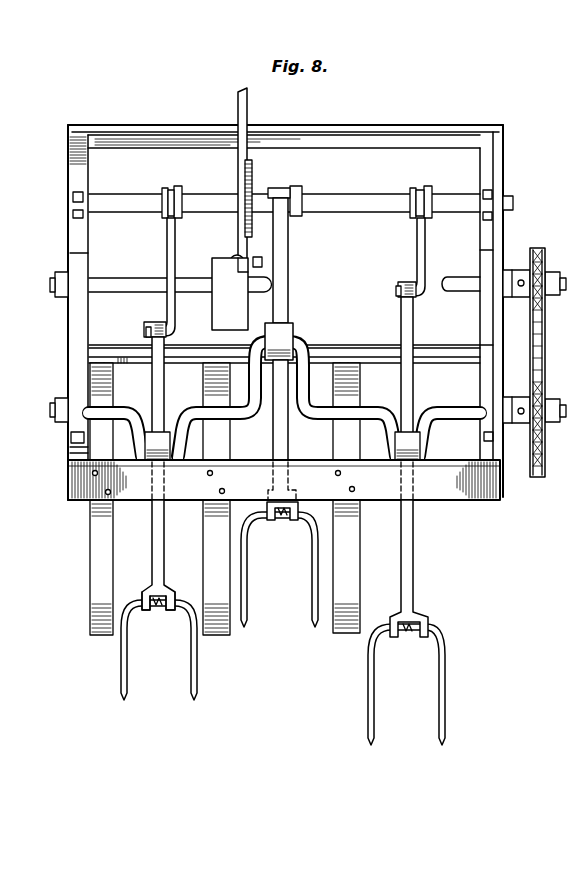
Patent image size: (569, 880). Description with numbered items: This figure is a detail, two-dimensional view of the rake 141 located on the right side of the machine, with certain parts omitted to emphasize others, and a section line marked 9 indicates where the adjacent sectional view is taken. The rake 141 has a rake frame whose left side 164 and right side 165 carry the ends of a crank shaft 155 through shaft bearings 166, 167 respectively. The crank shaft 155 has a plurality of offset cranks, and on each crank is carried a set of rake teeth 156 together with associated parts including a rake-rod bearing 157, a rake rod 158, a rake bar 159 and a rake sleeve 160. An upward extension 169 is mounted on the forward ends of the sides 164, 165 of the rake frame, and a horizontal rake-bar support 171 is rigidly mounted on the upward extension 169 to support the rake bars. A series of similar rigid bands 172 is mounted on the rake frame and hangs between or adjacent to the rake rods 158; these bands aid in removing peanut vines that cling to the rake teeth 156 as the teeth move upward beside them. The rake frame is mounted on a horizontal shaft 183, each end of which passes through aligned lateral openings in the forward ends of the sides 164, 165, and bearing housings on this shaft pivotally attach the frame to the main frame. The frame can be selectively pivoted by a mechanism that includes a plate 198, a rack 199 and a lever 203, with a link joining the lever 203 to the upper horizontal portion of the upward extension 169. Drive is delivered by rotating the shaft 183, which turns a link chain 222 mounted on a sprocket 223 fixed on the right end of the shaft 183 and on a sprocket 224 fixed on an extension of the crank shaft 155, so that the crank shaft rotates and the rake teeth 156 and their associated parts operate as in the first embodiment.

The section line 9- 9 is at (91, 124).
The rake 141 is at (503, 179).
The crank shaft 155 is at (133, 407).
The rake teeth 156 is at (128, 653).
The rake-rod bearing 157 is at (170, 434).
The rake rod 158 is at (165, 556).
The rake bar 159 is at (176, 252).
The rake sleeve 160 is at (166, 597).
The left side 164 is at (91, 252).
The right side 165 is at (481, 232).
The shaft bearing 166 is at (65, 432).
The shaft bearing 167 is at (488, 418).
The upward extension 169 is at (342, 124).
The rake-bar support 171 is at (337, 198).
The rigid bands 172 is at (88, 556).
The horizontal shaft 183 is at (137, 290).
The plate 198 is at (237, 292).
The rack 199 is at (253, 176).
The lever 203 is at (238, 93).
The link chain 222 is at (548, 386).
The sprocket 223 is at (537, 250).
The sprocket 224 is at (537, 477).